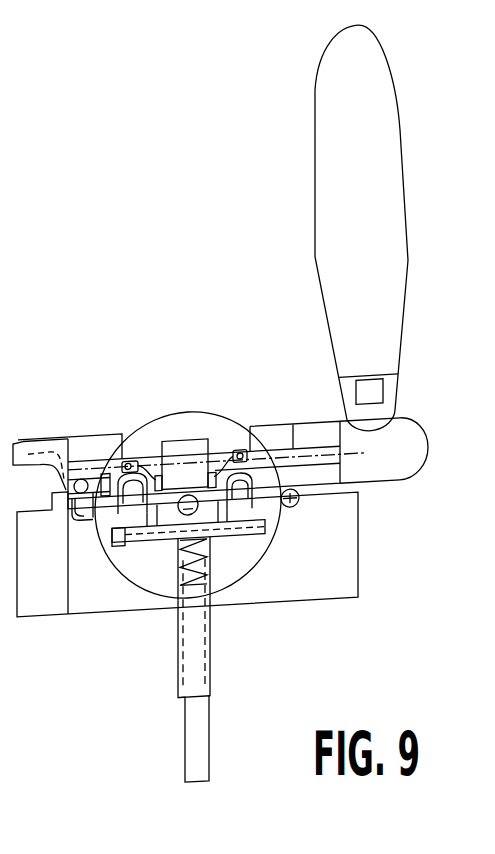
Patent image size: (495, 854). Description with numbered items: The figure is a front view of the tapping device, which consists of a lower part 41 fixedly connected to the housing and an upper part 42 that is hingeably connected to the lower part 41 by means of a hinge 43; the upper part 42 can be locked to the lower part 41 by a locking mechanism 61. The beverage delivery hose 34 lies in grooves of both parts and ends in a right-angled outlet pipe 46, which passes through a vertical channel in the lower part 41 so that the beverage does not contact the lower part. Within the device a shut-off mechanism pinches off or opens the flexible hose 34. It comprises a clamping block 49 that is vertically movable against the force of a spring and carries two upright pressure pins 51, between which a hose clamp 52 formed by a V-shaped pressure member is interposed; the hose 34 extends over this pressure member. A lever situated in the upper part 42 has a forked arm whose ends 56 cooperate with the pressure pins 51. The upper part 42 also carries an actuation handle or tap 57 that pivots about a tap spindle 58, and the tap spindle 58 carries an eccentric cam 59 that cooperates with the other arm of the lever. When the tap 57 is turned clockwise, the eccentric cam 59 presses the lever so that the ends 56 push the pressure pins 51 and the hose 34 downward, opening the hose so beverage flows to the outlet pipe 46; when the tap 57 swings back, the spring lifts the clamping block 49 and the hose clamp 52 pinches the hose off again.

The actuation handle or tap 57 is at (401, 136).
The tap spindle 58 is at (292, 427).
The locking mechanism 61 is at (25, 443).
The upper part 42 is at (78, 440).
The eccentric cam 59 is at (187, 440).
The ends of the forked arm 56 is at (130, 461).
The pressure pins 51 is at (125, 517).
The beverage delivery hose 34 is at (160, 514).
The clamping block 49 is at (128, 543).
The hose clamp 52 is at (218, 507).
The outlet pipe 46 is at (210, 738).
The lower part 41 is at (335, 600).
The hinge 43 is at (300, 500).